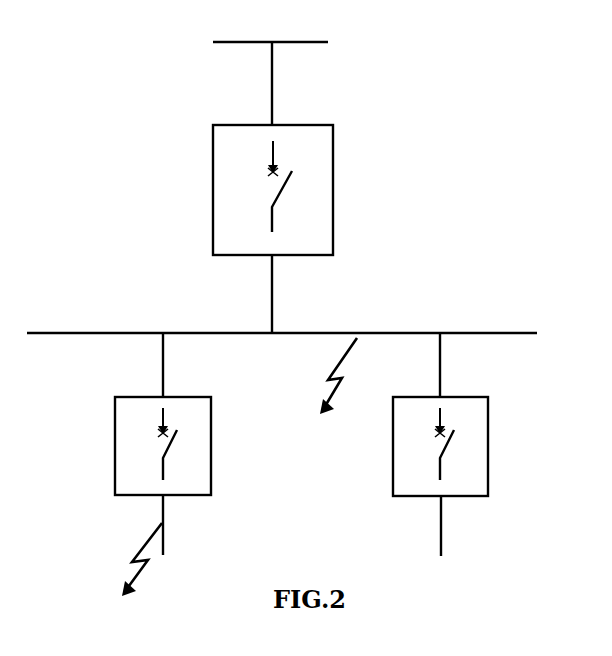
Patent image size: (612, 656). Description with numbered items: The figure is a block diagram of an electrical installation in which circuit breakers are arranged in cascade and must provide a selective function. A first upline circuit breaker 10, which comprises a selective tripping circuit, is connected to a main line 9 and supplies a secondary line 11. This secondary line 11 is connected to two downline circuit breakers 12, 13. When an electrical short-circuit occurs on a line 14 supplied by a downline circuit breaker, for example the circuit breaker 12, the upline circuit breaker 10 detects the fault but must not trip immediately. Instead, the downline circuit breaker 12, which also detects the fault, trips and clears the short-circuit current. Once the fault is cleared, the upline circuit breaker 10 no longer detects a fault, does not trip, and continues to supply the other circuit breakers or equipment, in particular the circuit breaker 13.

The main line 9 is at (298, 41).
The upline circuit breaker 10 is at (333, 197).
The secondary line 11 is at (325, 333).
The downline circuit breaker 12 is at (309, 387).
The downline circuit breaker 13 is at (488, 463).
The line 14 is at (165, 546).